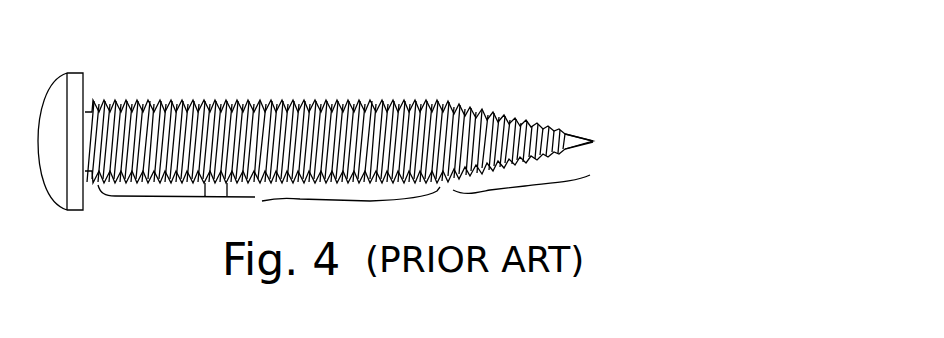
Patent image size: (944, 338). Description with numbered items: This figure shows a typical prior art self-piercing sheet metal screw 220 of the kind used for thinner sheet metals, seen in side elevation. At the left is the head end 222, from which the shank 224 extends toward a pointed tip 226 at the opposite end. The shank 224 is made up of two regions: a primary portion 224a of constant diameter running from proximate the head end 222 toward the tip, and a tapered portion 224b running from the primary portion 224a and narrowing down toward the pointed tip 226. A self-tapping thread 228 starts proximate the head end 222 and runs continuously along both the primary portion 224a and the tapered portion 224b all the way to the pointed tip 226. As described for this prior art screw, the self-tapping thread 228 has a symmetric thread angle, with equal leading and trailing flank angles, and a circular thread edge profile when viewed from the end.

The self-piercing sheet metal screw 220 is at (436, 77).
The head end 222 is at (97, 50).
The shank 224 is at (276, 72).
The primary portion 224a is at (258, 197).
The tapered portion 224b is at (525, 186).
The pointed tip 226 is at (581, 107).
The self-tapping thread 228 is at (206, 100).